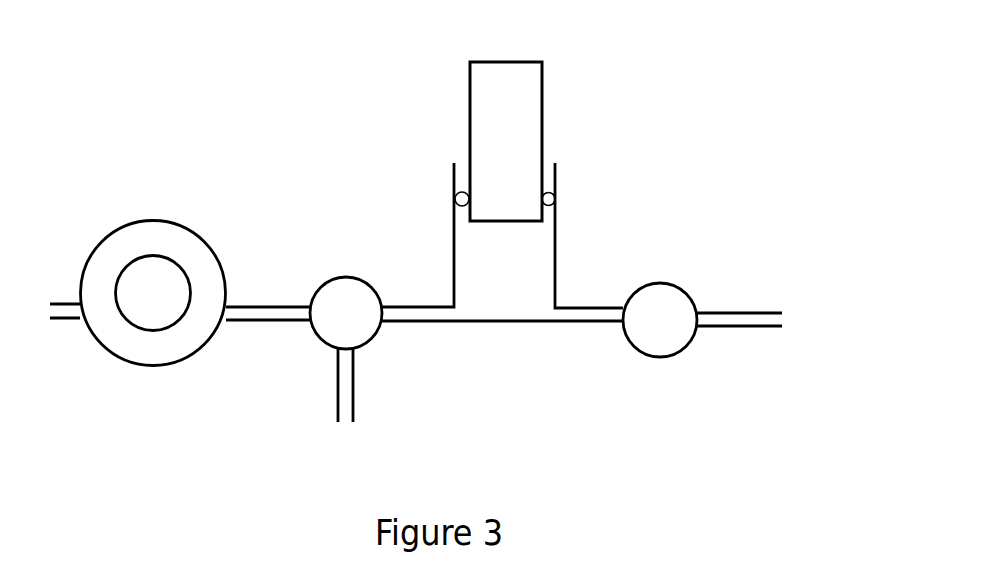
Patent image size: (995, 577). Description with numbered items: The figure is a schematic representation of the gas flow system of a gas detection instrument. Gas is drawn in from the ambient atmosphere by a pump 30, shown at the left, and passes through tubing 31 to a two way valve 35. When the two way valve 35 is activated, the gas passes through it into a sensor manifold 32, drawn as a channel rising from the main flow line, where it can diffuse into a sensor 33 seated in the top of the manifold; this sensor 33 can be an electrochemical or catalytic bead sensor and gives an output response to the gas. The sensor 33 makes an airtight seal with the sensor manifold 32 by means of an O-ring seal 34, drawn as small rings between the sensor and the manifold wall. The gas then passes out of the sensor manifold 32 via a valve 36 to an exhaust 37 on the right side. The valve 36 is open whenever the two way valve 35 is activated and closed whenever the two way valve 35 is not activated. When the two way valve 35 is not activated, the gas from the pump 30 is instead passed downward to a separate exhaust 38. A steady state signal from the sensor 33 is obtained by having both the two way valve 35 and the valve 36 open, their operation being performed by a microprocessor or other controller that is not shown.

The pump 30 is at (153, 232).
The tubing 31 is at (267, 321).
The sensor manifold 32 is at (453, 247).
The sensor 33 is at (485, 105).
The O-ring seal 34 is at (557, 192).
The two way valve 35 is at (338, 307).
The valve 36 is at (653, 340).
The exhaust 37 is at (782, 313).
The exhaust 38 is at (353, 400).